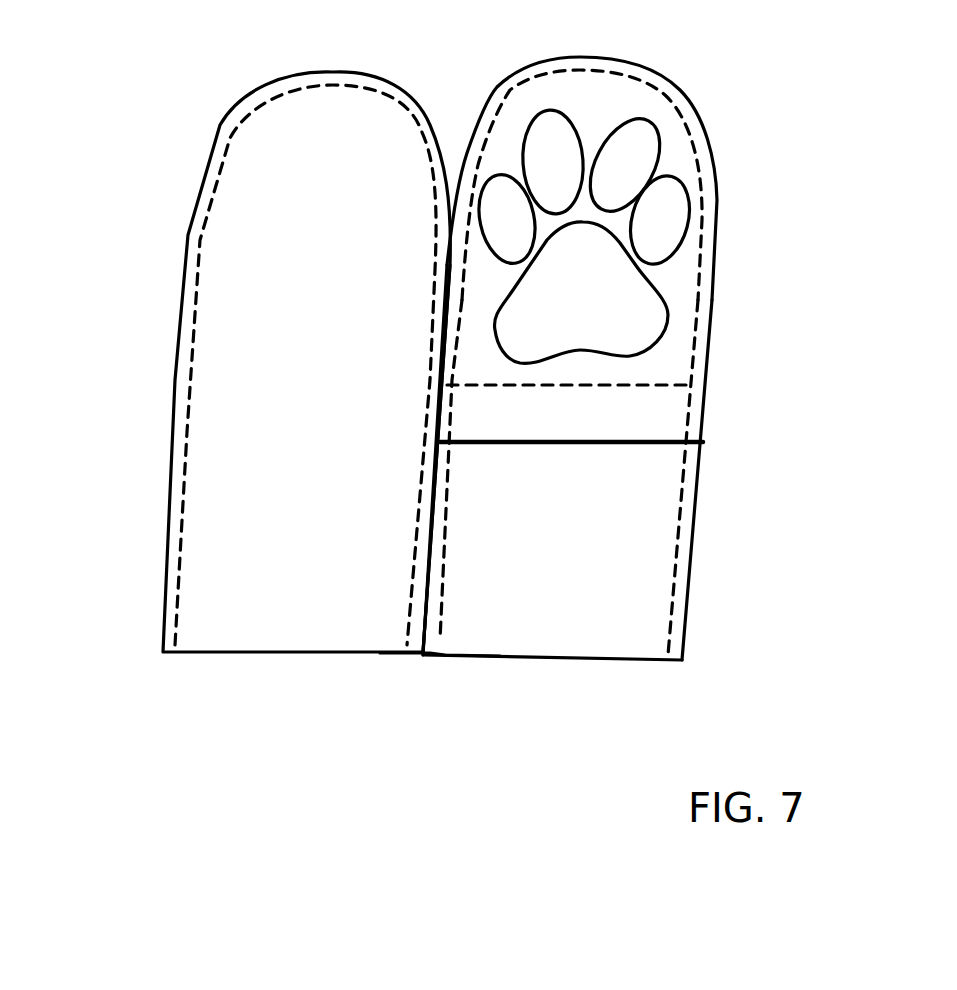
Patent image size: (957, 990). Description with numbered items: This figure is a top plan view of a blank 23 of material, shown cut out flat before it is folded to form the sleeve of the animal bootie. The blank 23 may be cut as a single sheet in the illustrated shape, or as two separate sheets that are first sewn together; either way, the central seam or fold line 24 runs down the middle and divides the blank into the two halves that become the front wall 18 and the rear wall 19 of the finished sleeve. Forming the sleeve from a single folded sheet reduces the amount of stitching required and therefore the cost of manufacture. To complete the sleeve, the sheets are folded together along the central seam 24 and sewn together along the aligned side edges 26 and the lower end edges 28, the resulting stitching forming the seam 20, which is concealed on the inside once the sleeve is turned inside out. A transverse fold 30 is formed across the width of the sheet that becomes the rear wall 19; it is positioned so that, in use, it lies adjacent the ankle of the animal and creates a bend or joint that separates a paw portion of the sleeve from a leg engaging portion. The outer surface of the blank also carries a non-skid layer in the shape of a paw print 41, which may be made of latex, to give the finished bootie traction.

The front wall 18 is at (213, 502).
The rear wall 19 is at (653, 560).
The seam 20 is at (670, 620).
The blank 23 is at (450, 678).
The central seam or fold line 24 is at (430, 560).
The side edges 26 is at (173, 432).
The lower end edges 28 is at (660, 75).
The transverse fold 30 is at (700, 420).
The paw print 41 is at (670, 210).